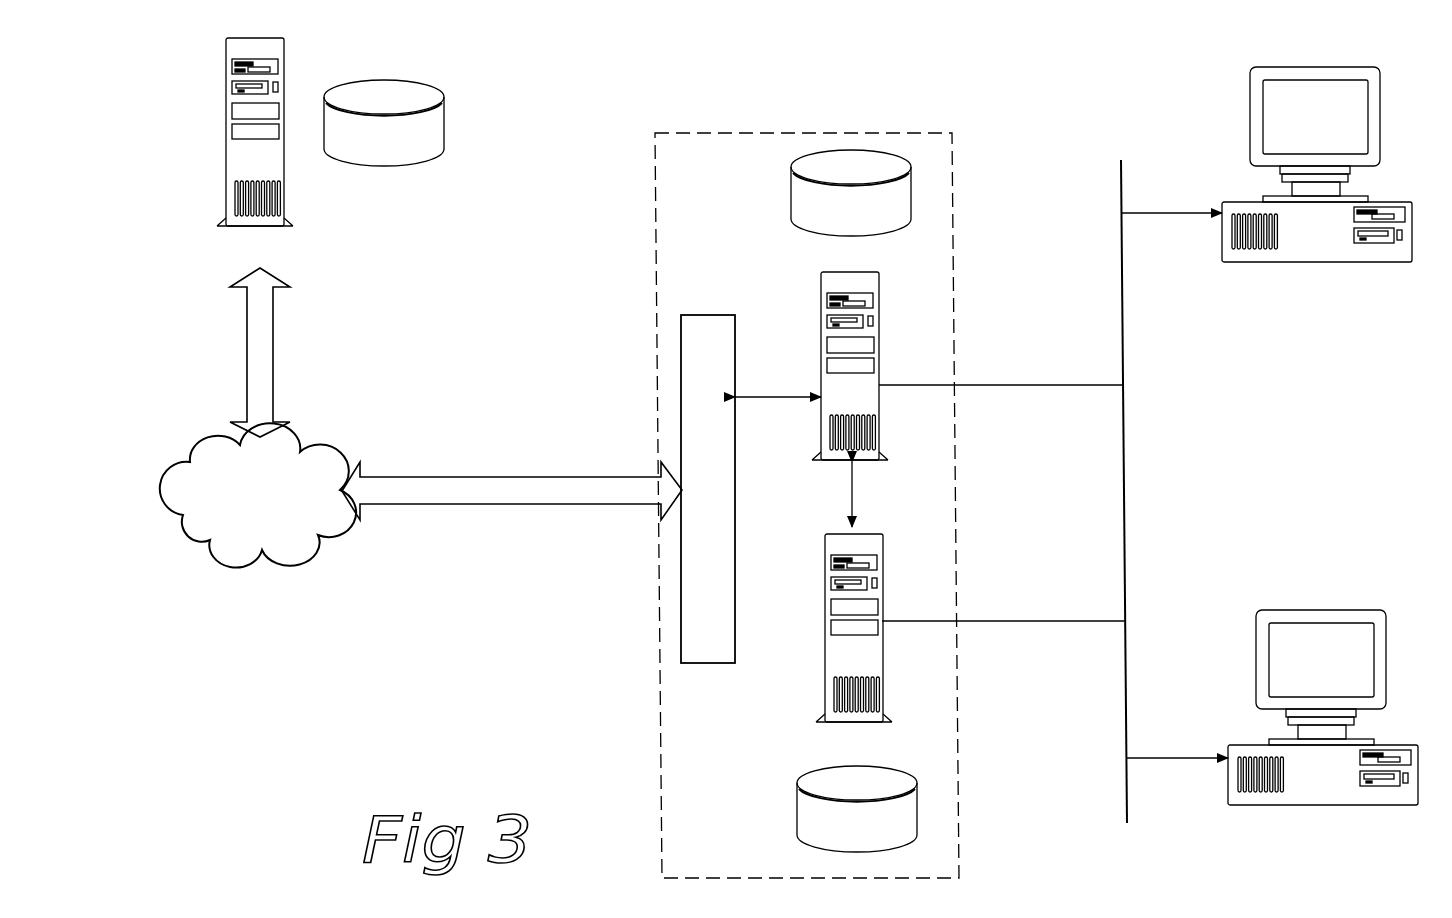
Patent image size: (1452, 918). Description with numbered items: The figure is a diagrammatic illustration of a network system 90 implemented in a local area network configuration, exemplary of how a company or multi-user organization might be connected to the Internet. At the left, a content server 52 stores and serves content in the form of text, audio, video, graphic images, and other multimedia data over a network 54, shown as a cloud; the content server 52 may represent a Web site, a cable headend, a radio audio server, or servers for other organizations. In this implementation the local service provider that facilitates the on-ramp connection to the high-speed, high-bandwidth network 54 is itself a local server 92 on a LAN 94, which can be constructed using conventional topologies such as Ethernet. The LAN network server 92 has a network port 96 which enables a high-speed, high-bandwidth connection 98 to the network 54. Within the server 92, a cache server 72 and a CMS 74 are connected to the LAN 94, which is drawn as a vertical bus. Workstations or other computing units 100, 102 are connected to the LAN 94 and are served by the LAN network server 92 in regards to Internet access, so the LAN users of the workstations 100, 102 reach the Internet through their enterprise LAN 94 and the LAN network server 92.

The content server 52 is at (190, 160).
The network 54 is at (312, 447).
The cache server 72 is at (935, 213).
The CMS 74 is at (778, 767).
The network system 90 is at (997, 67).
The local server 92 is at (733, 132).
The LAN 94 is at (1125, 513).
The network port 96 is at (705, 325).
The high-speed, high-bandwidth connection 98 is at (397, 490).
The workstation 100 is at (1390, 200).
The workstation 102 is at (1393, 745).